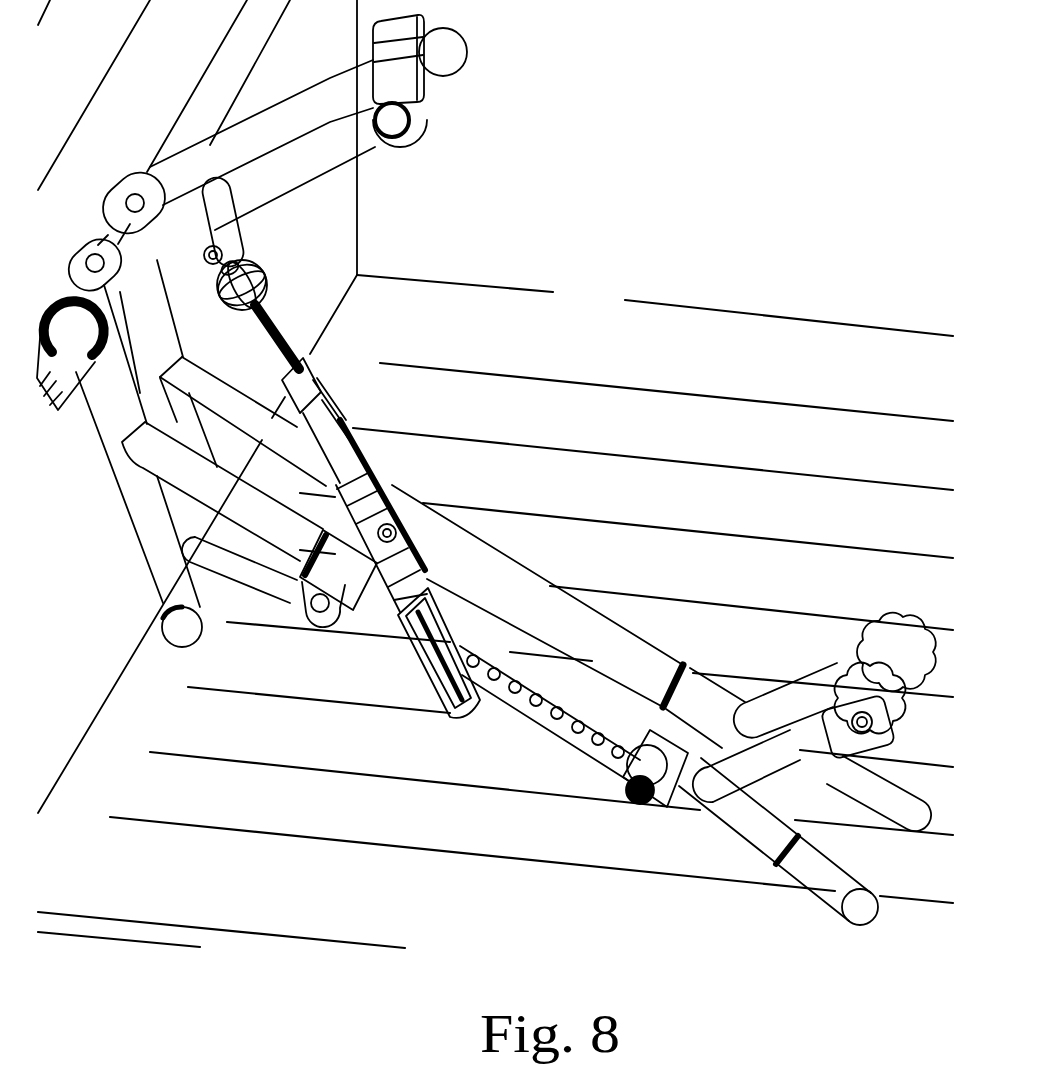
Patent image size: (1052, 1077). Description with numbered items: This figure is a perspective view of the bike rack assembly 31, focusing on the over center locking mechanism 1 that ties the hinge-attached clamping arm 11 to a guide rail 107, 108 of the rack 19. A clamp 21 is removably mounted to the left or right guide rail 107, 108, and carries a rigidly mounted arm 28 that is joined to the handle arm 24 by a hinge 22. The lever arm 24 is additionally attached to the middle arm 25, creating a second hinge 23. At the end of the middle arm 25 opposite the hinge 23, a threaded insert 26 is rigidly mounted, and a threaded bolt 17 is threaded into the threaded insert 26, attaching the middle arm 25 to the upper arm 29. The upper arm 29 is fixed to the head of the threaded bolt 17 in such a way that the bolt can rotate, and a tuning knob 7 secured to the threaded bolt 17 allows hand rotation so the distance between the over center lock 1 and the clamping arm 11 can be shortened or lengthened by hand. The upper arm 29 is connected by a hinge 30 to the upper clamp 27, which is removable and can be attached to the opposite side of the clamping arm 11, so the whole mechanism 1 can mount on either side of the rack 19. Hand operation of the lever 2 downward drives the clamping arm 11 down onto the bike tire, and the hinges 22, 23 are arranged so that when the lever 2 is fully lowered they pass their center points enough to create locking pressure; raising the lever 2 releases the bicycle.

The over center locking mechanism 1 is at (351, 361).
The lever 2 is at (442, 704).
The tuning knob 7 is at (272, 270).
The clamping arm 11 is at (290, 78).
The threaded bolt 17 is at (272, 312).
The rack 19 is at (258, 576).
The clamp 21 is at (341, 585).
The hinge 22 is at (382, 477).
The second hinge 23 is at (413, 521).
The handle arm 24 is at (415, 560).
The middle arm 25 is at (346, 418).
The threaded insert 26 is at (281, 374).
The upper clamp 27 is at (212, 212).
The arm 28 is at (352, 515).
The upper arm 29 is at (235, 262).
The hinge 30 is at (213, 260).
The bike rack assembly 31 is at (135, 118).
The guide rail 107 is at (585, 710).
The guide rail 108 is at (598, 645).